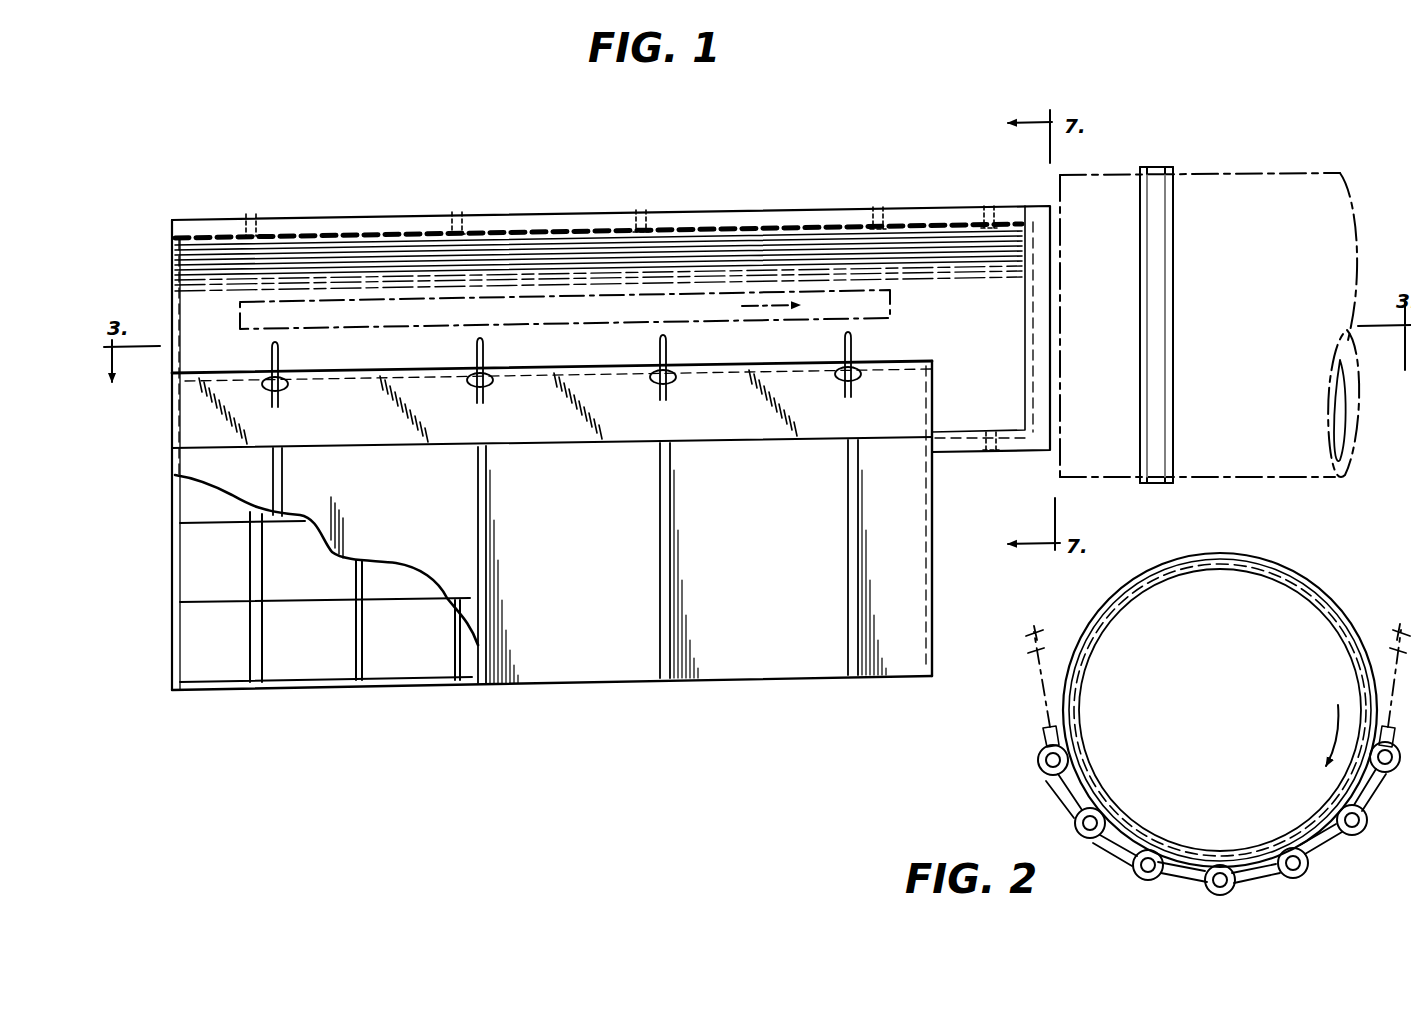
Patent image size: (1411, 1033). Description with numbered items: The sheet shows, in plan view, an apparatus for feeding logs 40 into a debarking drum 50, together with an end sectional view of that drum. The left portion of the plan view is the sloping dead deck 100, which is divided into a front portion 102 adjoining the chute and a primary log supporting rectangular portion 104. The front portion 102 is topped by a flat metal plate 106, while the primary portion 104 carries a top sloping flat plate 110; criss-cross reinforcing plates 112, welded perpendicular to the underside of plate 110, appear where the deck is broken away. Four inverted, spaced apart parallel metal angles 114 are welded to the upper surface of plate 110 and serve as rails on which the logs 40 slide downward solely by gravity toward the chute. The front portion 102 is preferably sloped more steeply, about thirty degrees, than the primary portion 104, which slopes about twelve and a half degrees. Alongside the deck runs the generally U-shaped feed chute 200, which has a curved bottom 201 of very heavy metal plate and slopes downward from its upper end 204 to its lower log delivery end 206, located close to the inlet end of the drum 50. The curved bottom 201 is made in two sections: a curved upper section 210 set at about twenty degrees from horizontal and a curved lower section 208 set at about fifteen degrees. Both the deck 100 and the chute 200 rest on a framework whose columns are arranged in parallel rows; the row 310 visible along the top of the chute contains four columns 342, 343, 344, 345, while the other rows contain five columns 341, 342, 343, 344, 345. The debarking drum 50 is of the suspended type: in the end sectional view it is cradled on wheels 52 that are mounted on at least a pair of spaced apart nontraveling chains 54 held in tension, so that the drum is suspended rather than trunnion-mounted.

In FIG. 1, the logs 40 is at (578, 322).
In FIG. 1, the debarking drum 50 is at (1262, 148).
In FIG. 2, the debarking drum 50 is at (1312, 565).
In FIG. 1, the wheels 52 is at (1060, 196).
In FIG. 2, the wheels 52 is at (1038, 764).
In FIG. 2, the nontraveling chains 54 is at (1119, 856).
In FIG. 1, the dead deck 100 is at (162, 513).
In FIG. 1, the front portion 102 is at (196, 427).
In FIG. 1, the primary log supporting rectangular portion 104 is at (598, 644).
In FIG. 1, the top flat metal plate 106 is at (540, 426).
In FIG. 1, the top sloping flat plate 110 is at (588, 541).
In FIG. 1, the criss-cross reinforcing plates 112 is at (178, 577).
In FIG. 1, the inverted metal angles 114 is at (284, 473).
In FIG. 1, the feed chute 200 is at (959, 392).
In FIG. 1, the curved bottom 201 is at (226, 304).
In FIG. 1, the upper end 204 is at (172, 312).
In FIG. 1, the lower log delivery end 206 is at (1020, 307).
In FIG. 1, the curved lower section 208 is at (815, 349).
In FIG. 1, the curved upper section 210 is at (414, 361).
In FIG. 1, the row of columns 310 is at (590, 205).
In FIG. 1, the column 341 is at (989, 206).
In FIG. 1, the column 342 is at (878, 208).
In FIG. 1, the column 343 is at (650, 210).
In FIG. 1, the column 344 is at (456, 211).
In FIG. 1, the column 345 is at (252, 213).